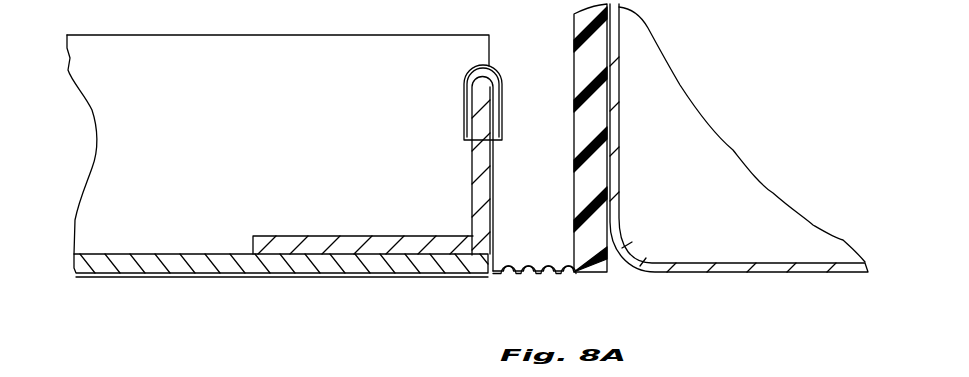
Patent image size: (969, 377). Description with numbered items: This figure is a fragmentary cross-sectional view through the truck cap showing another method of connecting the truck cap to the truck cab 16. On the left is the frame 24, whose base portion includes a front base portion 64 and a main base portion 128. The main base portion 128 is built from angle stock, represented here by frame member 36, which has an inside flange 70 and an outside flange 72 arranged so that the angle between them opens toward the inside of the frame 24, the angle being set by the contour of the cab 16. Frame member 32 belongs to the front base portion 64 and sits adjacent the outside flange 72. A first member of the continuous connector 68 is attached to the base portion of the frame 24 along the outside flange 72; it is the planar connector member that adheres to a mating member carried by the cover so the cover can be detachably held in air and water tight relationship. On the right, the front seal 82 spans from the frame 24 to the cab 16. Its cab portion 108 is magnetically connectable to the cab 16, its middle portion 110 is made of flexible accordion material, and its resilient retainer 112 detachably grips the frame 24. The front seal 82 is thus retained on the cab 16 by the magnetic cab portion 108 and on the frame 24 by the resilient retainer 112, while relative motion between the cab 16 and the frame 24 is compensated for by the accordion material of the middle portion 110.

The cab 16 is at (726, 268).
The frame 24 is at (297, 3).
The frame member 32 is at (347, 243).
The frame member 36 is at (141, 166).
The front base portion 64 is at (461, 280).
The first member of the continuous connector 68 is at (233, 272).
The inside flange 70 is at (264, 133).
The outside flange 72 is at (192, 262).
The front seal 82 is at (563, 279).
The cab portion 108 is at (583, 79).
The middle portion 110 is at (528, 274).
The resilient retainer 112 is at (467, 97).
The main base portion 128 is at (182, 30).